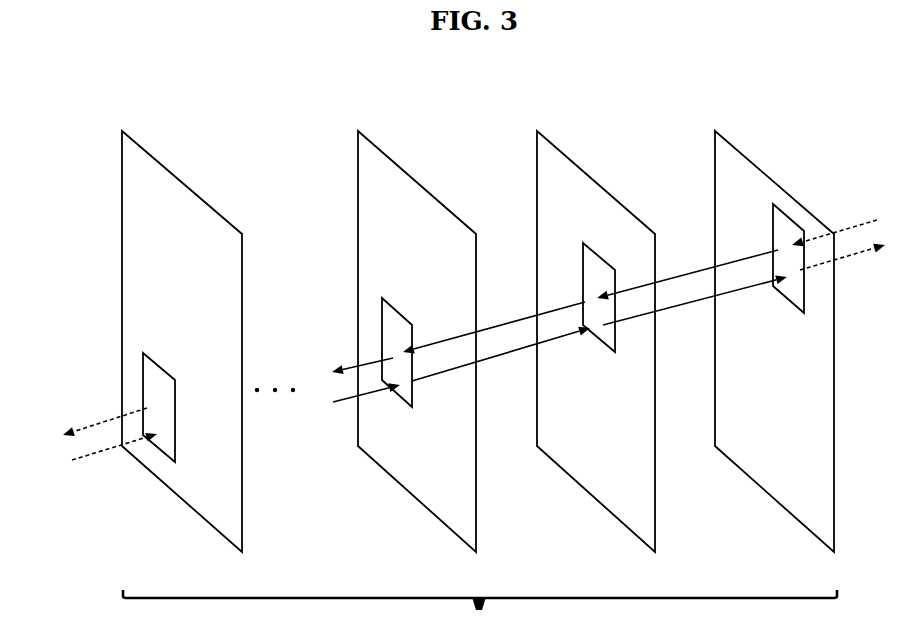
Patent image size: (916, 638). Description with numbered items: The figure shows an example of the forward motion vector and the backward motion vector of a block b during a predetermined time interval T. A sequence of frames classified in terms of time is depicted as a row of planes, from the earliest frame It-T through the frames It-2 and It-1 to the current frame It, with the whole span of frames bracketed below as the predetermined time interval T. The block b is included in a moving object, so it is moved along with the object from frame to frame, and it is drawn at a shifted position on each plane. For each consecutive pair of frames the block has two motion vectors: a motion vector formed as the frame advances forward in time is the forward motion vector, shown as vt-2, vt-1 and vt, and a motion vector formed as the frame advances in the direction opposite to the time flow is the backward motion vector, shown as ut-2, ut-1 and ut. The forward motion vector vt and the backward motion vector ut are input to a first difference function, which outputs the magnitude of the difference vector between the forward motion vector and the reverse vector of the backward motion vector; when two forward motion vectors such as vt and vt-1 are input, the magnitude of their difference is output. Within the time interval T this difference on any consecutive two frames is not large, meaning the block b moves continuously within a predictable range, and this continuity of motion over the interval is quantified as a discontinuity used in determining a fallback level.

The frame at time t-T It-T is at (174, 321).
The frame at time t-2 It-2 is at (402, 321).
The frame at time t-1 It-1 is at (585, 321).
The frame at time t It is at (774, 321).
The block b is at (168, 468).
The backward motion vector at time t-2 ut-2 is at (458, 327).
The forward motion vector at time t-2 vt-2 is at (461, 364).
The backward motion vector at time t-1 ut-1 is at (687, 271).
The forward motion vector at time t-1 vt-1 is at (695, 308).
The backward motion vector ut is at (839, 218).
The forward motion vector vt is at (844, 266).
The predetermined time interval T is at (480, 614).